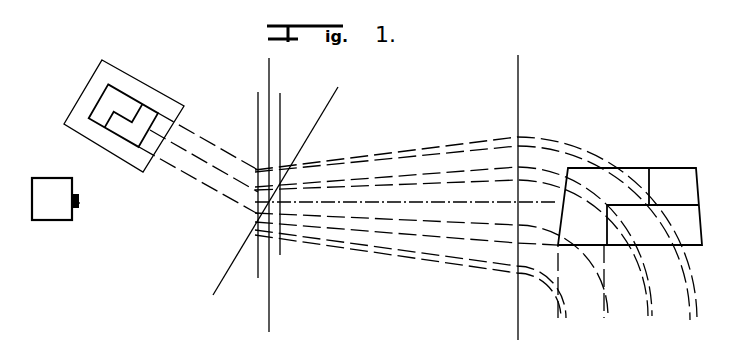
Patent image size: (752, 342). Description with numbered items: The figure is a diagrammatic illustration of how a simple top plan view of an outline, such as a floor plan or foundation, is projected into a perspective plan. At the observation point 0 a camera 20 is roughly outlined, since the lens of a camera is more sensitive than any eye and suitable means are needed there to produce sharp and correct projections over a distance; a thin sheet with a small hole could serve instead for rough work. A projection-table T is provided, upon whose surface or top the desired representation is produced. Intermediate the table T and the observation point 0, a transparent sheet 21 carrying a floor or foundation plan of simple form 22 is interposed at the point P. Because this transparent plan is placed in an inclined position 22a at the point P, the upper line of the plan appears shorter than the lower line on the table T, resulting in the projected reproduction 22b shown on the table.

The camera 20 is at (42, 187).
The observation point 0 is at (80, 204).
The transparent sheet 21 is at (90, 85).
The floor or foundation plan 22 is at (124, 90).
The inclined position of the transparent plan 22a is at (312, 136).
The projected reproduction 22b is at (628, 167).
The point of the transparent plan P is at (266, 85).
The projection-table T is at (514, 81).